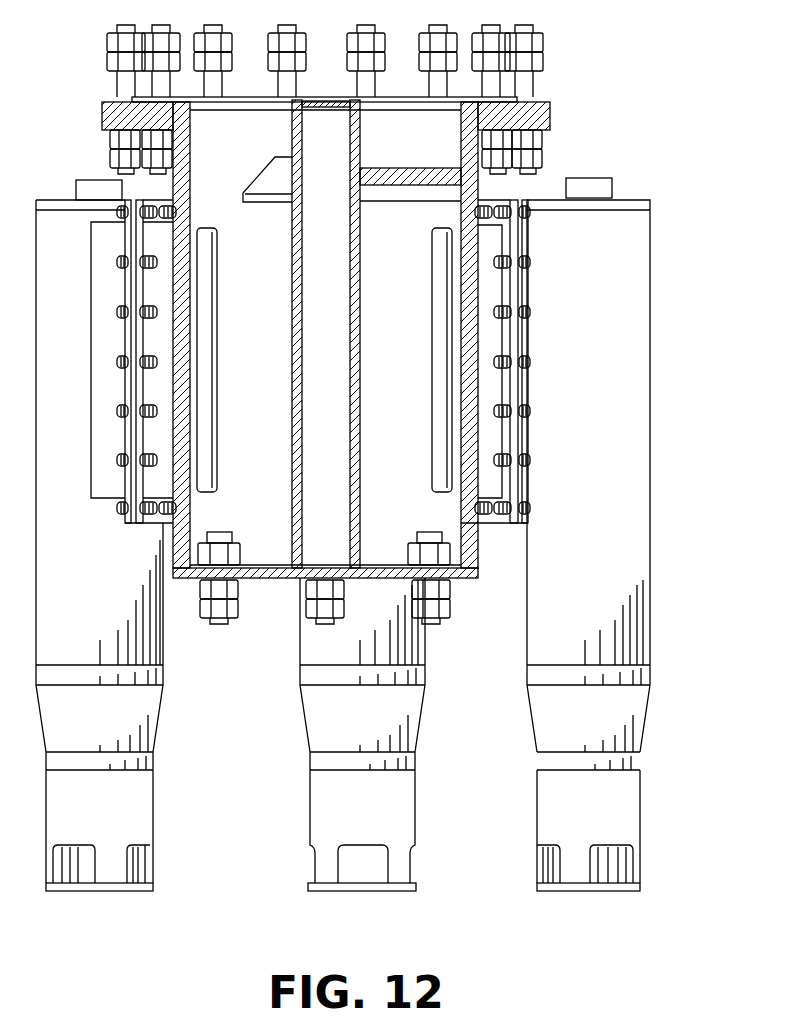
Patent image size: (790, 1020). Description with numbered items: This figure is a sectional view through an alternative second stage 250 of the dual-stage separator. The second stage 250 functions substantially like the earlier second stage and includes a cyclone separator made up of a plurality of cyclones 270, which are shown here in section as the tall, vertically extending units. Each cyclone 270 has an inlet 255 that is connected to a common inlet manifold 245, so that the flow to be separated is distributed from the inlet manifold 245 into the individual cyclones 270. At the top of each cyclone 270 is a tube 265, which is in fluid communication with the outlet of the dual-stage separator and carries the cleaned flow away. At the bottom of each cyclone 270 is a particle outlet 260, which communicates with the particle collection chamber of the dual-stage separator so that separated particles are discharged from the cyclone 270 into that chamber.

The inlet manifold 245 is at (484, 209).
The second stage 250 is at (665, 326).
The inlet 255 is at (432, 387).
The particle outlet 260 is at (578, 893).
The tube 265 is at (590, 178).
The cyclone 270 is at (636, 716).